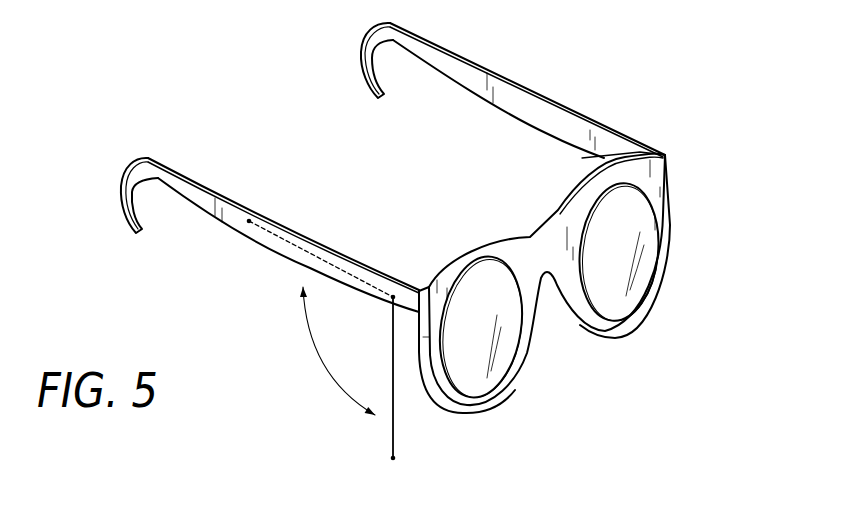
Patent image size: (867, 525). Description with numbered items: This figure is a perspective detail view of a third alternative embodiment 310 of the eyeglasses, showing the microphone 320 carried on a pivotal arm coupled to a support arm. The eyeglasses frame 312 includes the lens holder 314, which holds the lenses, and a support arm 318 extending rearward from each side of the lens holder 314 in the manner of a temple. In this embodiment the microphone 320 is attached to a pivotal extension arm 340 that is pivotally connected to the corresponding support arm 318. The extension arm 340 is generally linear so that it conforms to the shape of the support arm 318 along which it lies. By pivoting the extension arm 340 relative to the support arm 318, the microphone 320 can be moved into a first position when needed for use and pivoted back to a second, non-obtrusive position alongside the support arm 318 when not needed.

The third alternative embodiment 310 is at (409, 218).
The eyeglasses frame 312 is at (530, 228).
The lens holder 314 is at (620, 337).
The support arm 318 is at (212, 183).
The microphone 320 is at (393, 460).
The pivotal extension arm 340 is at (387, 432).